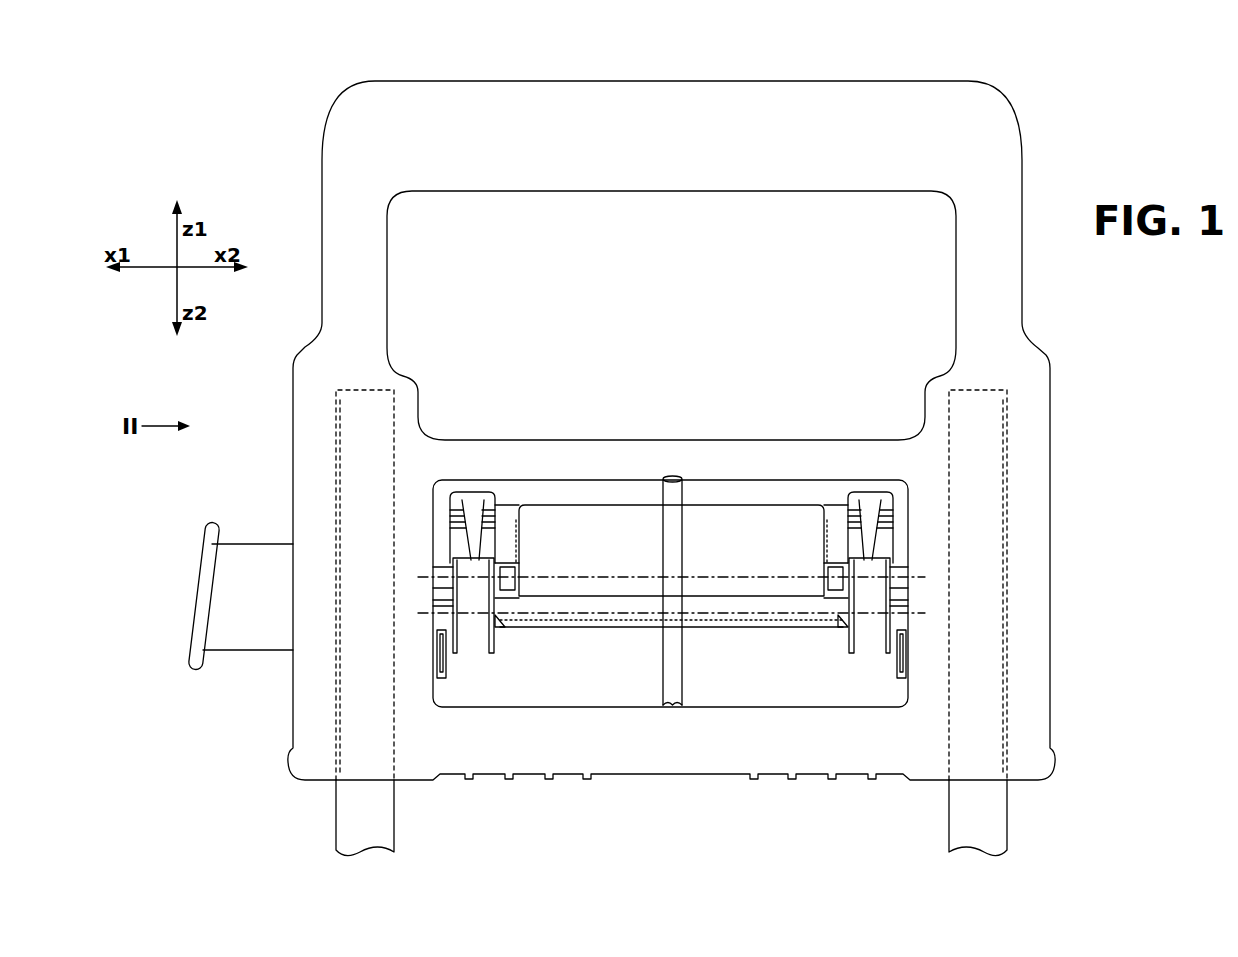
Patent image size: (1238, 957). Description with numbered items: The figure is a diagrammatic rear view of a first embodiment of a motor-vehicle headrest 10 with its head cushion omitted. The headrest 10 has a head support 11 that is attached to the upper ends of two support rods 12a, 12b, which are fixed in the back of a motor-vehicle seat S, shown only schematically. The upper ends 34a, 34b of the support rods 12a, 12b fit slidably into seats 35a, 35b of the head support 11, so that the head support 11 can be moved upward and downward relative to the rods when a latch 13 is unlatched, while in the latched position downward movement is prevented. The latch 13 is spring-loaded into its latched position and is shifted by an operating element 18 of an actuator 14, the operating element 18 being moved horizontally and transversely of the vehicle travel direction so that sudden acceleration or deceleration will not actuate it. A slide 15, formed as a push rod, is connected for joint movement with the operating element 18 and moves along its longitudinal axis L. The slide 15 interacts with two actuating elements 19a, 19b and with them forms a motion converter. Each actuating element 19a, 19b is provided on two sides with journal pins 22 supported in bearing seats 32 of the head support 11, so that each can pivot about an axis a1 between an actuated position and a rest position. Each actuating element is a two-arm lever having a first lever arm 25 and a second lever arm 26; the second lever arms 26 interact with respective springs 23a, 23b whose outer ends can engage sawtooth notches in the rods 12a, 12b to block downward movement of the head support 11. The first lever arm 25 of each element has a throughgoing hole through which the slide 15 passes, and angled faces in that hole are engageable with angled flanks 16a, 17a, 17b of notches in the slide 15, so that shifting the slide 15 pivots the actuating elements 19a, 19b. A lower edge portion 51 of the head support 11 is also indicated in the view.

The motor-vehicle headrest 10 is at (1082, 152).
The head support 11 is at (1040, 386).
The support rod 12a is at (385, 827).
The support rod 12b is at (950, 827).
The latch 13 is at (922, 566).
The actuator 14 is at (196, 678).
The slide 15 is at (630, 629).
The angled flank 16a is at (502, 628).
The angled flank 17a is at (445, 640).
The angled flank 17b is at (848, 614).
The operating element 18 is at (246, 640).
The actuating element 19a is at (470, 522).
The actuating element 19b is at (873, 522).
The journal pin 22 is at (516, 578).
The spring 23a is at (494, 512).
The spring 23b is at (849, 512).
The first lever arm 25 is at (472, 640).
The second lever arm 26 is at (480, 495).
The bearing seat 32 is at (532, 582).
The upper end of support rod 34a is at (345, 500).
The upper end of support rod 34b is at (997, 500).
The seat 35a is at (338, 410).
The seat 35b is at (1005, 410).
The lower edge portion 51 is at (304, 744).
The motor-vehicle seat S is at (340, 852).
The pivot axis a1 is at (641, 576).
The longitudinal axis L is at (713, 614).